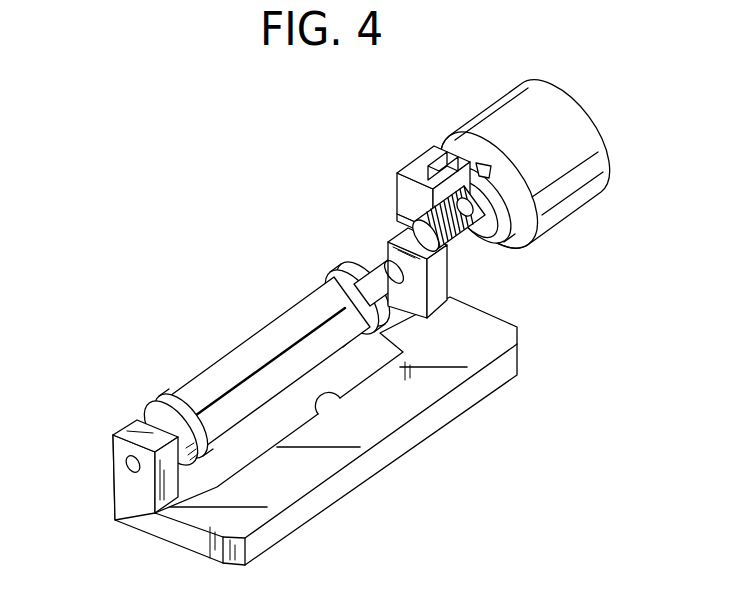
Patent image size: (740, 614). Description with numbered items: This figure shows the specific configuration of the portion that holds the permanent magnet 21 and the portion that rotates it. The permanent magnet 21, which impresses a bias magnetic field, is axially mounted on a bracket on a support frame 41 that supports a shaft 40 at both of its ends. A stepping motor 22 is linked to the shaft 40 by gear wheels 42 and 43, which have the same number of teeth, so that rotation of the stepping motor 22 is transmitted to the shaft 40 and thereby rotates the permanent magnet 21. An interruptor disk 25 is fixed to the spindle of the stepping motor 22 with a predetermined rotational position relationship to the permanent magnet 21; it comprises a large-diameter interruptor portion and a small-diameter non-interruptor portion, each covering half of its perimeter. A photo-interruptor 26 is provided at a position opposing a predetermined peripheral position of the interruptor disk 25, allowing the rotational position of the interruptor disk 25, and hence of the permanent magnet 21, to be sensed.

The permanent magnet 21 is at (268, 326).
The stepping motor 22 is at (588, 202).
The interruptor disk 25 is at (497, 223).
The photo-interruptor 26 is at (413, 170).
The shaft 40 is at (413, 308).
The support frame 41 is at (437, 415).
The gear wheel 42 is at (400, 215).
The gear wheel 43 is at (472, 252).